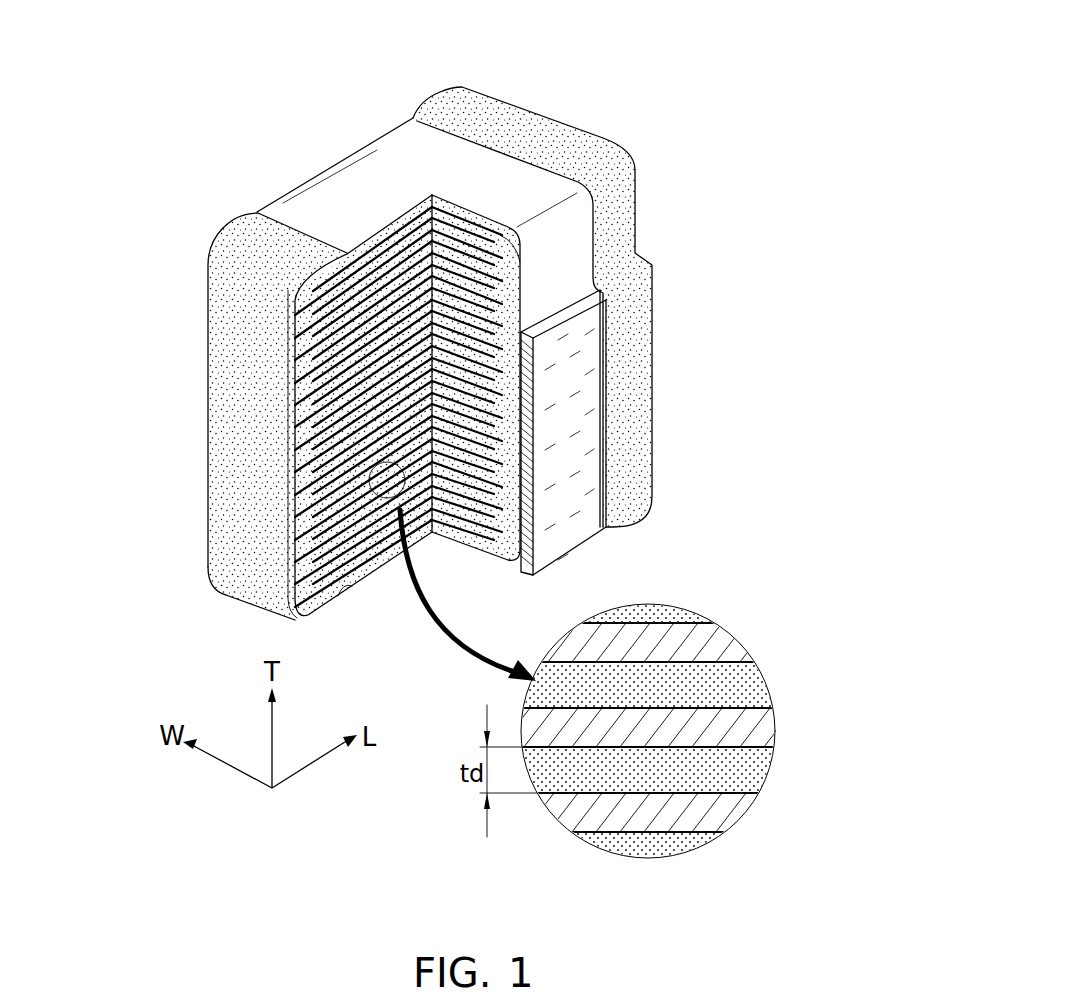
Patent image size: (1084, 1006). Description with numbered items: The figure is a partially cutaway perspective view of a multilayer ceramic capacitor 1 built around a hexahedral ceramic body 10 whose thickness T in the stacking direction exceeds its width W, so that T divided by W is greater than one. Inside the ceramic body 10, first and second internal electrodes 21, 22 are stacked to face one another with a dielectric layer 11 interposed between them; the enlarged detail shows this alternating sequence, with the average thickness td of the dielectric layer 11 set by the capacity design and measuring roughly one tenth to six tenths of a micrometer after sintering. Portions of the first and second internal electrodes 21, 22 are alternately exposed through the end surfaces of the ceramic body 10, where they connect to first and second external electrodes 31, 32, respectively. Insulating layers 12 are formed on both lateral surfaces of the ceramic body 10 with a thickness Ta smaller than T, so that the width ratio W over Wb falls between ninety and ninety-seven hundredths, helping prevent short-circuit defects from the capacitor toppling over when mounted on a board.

The multilayer ceramic capacitor 1 is at (412, 27).
The ceramic body 10 is at (345, 140).
The dielectric layer 11 is at (737, 687).
The insulating layer 12 is at (573, 533).
The first internal electrode 21 is at (733, 642).
The second internal electrode 22 is at (737, 730).
The first external electrode 31 is at (252, 237).
The second external electrode 32 is at (545, 133).